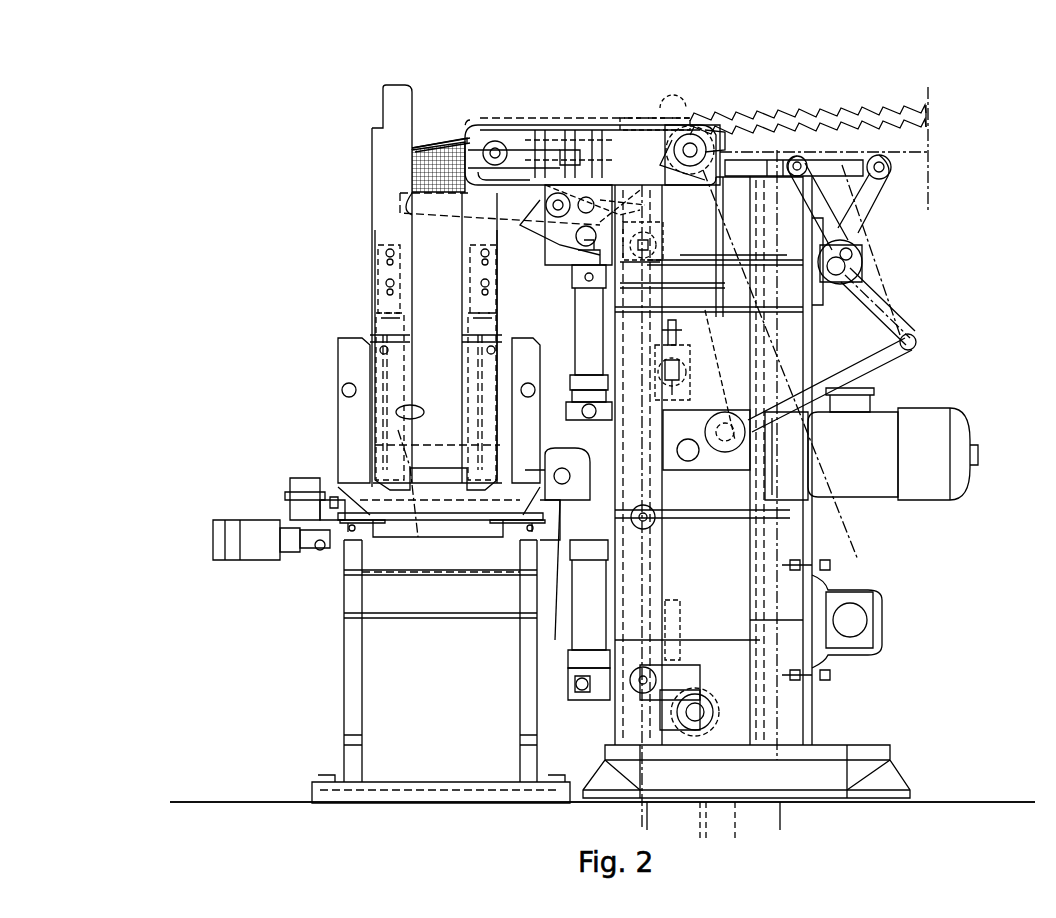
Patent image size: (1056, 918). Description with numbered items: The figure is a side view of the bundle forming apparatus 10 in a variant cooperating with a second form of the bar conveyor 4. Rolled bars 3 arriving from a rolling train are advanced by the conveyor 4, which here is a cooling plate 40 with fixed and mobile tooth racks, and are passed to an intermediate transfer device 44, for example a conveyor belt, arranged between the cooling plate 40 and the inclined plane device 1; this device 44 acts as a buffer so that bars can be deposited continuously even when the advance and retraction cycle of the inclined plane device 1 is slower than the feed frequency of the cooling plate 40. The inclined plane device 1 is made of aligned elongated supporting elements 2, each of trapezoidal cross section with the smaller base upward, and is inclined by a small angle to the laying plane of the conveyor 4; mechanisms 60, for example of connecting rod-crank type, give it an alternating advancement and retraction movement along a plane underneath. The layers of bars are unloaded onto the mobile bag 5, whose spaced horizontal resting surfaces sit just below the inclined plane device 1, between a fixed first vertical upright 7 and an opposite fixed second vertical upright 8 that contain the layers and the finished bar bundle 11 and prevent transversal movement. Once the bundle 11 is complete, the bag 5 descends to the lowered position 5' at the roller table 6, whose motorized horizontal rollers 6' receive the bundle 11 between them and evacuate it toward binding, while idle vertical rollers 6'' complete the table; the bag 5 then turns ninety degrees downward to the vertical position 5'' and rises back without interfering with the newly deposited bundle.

The inclined plane device 1 is at (468, 120).
The elongated supporting element 2 is at (425, 140).
The rolled bars 3 is at (690, 117).
The bar conveyor 4 is at (812, 106).
The mobile bag 5 is at (404, 338).
The lowered position of the mobile bag 5' is at (385, 483).
The vertical position of the mobile bag 5'' is at (502, 633).
The roller table 6 is at (382, 410).
The motorized horizontal rollers 6' is at (381, 635).
The idle vertical rollers 6'' is at (421, 360).
The first vertical upright 7 is at (383, 183).
The second vertical upright 8 is at (485, 235).
The bundle forming apparatus 10 is at (313, 264).
The bar bundle 11 is at (412, 148).
The cooling plate 40 is at (915, 120).
The intermediate transfer device 44 is at (552, 122).
The mechanisms 60 is at (866, 217).